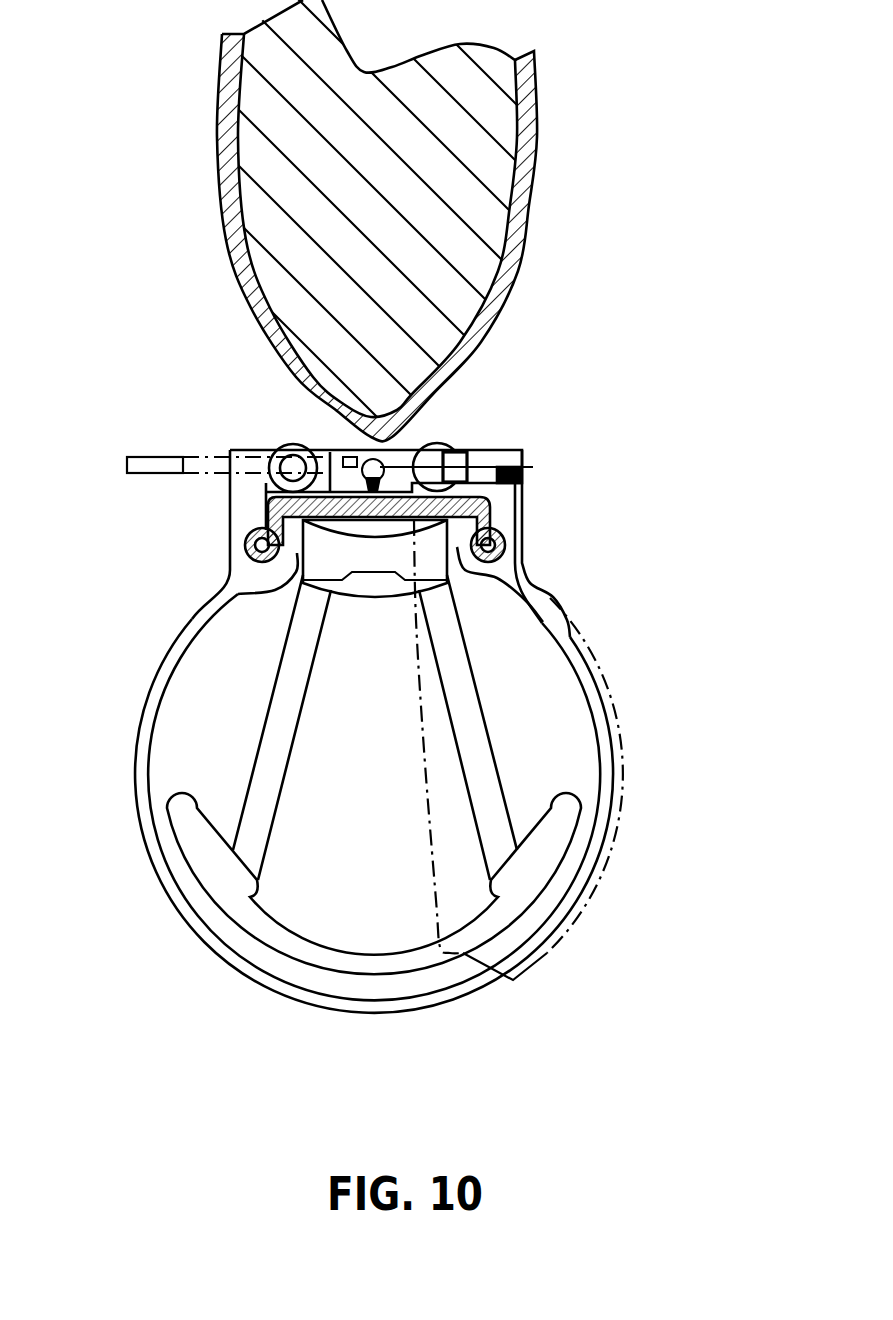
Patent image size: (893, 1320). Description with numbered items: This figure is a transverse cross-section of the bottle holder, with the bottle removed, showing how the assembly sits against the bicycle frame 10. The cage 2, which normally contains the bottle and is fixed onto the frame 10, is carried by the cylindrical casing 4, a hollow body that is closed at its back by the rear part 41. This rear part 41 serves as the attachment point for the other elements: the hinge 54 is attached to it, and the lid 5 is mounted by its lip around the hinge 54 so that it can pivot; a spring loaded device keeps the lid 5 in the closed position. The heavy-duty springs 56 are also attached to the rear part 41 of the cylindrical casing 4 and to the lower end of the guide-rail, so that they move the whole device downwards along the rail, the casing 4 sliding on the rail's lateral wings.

The frame 10 is at (528, 158).
The heavy-duty springs 56 is at (280, 453).
The hinge 54 is at (533, 466).
The rear part of the cylindrical casing 41 is at (507, 512).
The lid 5 is at (567, 723).
The cage 2 is at (263, 800).
The cylindrical casing 4 is at (263, 988).